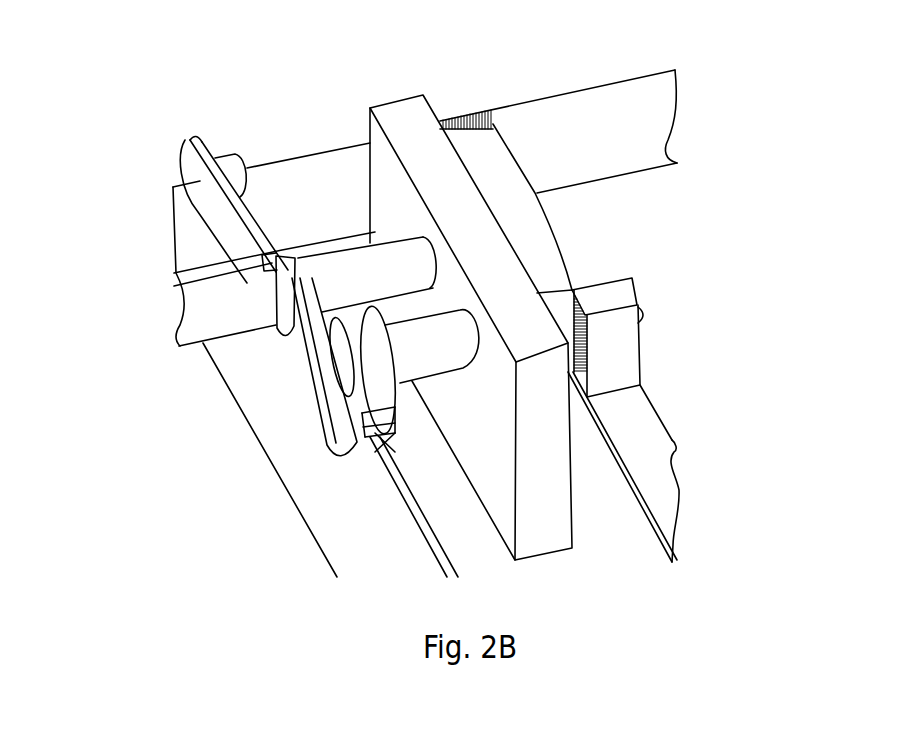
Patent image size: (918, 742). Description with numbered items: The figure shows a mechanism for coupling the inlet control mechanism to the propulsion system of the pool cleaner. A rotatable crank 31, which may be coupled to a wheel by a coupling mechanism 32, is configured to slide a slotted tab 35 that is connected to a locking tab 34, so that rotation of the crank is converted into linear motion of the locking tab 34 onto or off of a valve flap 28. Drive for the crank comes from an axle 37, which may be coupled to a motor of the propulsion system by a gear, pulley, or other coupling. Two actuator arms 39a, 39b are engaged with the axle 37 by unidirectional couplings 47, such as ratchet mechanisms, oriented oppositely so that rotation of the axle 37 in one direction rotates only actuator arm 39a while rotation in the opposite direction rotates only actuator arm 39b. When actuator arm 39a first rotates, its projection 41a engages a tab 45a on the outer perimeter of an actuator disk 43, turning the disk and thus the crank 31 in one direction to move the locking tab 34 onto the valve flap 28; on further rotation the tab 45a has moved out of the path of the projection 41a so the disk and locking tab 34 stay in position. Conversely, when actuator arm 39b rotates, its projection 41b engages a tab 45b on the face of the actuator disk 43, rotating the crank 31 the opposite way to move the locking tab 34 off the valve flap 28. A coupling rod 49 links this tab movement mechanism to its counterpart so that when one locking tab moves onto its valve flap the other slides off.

The coupling mechanism 32 is at (212, 86).
The valve flap 28 is at (562, 150).
The rotatable crank 31 is at (553, 293).
The locking tab 34 is at (480, 145).
The slotted tab 35 is at (633, 353).
The axle 37 is at (211, 320).
The actuator arm 39a is at (197, 176).
The actuator arm 39b is at (322, 408).
The projection 41a is at (245, 183).
The projection 41b is at (352, 398).
The actuator disk 43 is at (392, 400).
The tab 45a is at (395, 443).
The tab 45b is at (365, 405).
The unidirectional coupling 47 is at (278, 281).
The coupling rod 49 is at (643, 440).